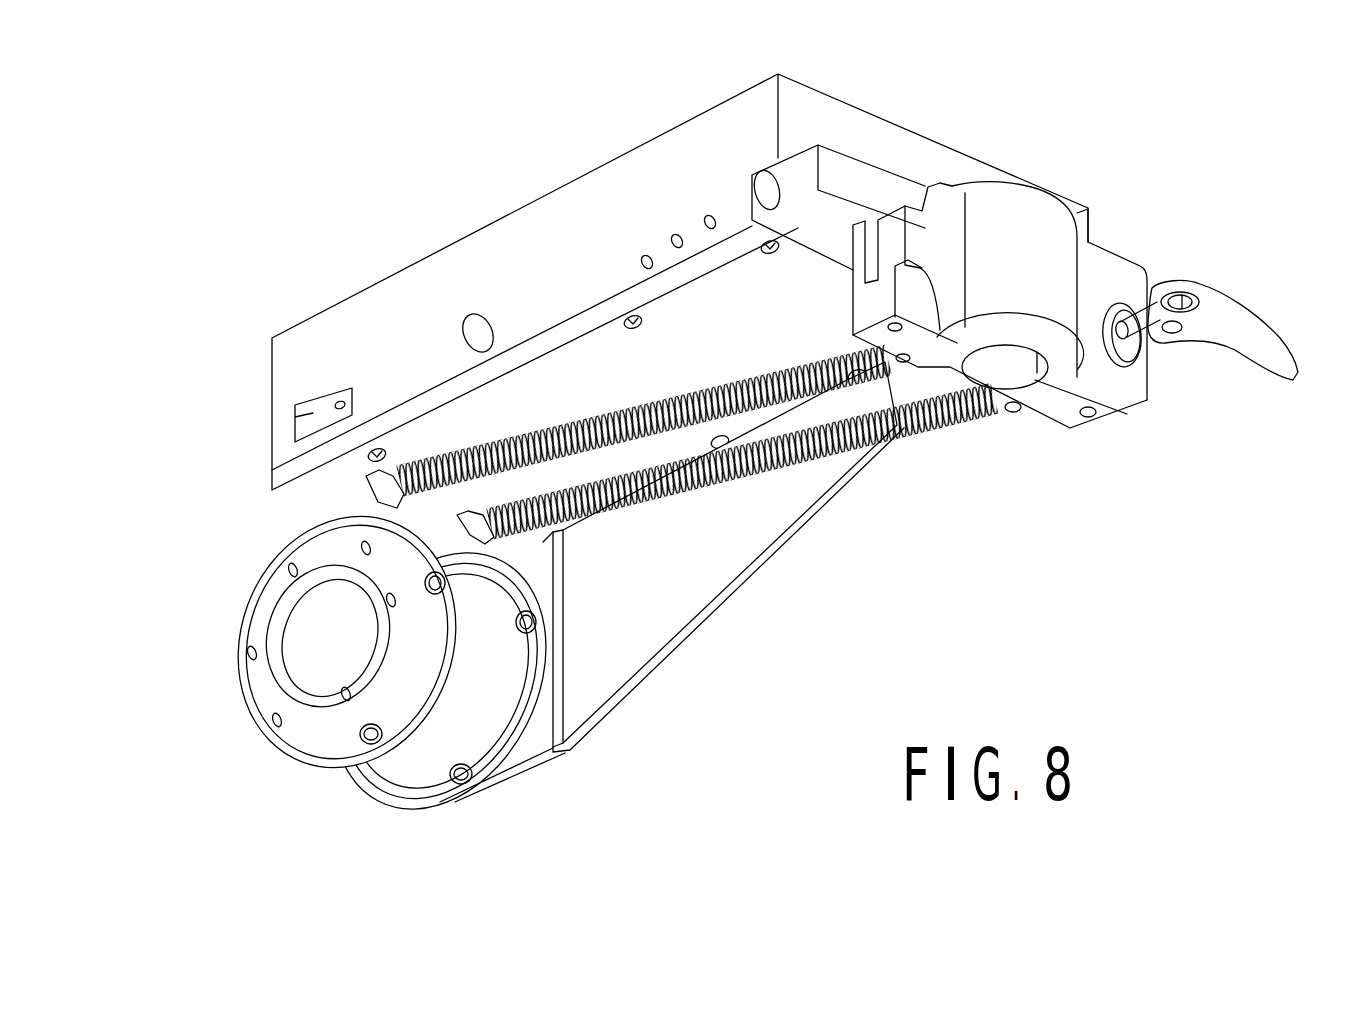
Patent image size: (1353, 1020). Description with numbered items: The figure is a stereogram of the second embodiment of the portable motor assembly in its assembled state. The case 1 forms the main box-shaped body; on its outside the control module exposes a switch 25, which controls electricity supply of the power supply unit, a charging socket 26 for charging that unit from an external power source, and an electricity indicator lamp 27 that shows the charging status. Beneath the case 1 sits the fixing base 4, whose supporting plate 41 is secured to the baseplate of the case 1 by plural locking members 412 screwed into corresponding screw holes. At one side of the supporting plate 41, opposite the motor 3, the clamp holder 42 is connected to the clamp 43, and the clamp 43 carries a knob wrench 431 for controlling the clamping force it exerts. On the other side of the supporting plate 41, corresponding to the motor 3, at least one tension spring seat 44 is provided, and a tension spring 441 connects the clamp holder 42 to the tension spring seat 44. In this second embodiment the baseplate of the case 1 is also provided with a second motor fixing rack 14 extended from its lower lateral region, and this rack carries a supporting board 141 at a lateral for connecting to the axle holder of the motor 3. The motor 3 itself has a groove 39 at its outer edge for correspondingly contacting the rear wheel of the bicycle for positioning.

The case 1 is at (588, 188).
The motor 3 is at (262, 722).
The fixing base 4 is at (1098, 435).
The second motor fixing rack 14 is at (530, 737).
The switch 25 is at (327, 398).
The charging socket 26 is at (478, 313).
The electricity indicator lamp 27 is at (680, 232).
The groove 39 is at (392, 753).
The supporting plate 41 is at (287, 505).
The clamp holder 42 is at (850, 168).
The clamp 43 is at (990, 370).
The tension spring seat 44 is at (557, 543).
The supporting board 141 is at (593, 686).
The locking member 412 is at (366, 454).
The knob wrench 431 is at (1228, 306).
The tension spring 441 is at (850, 445).